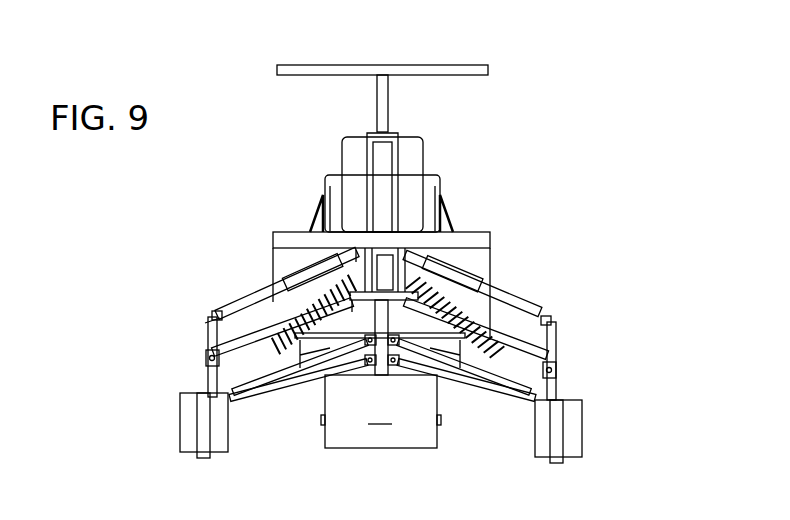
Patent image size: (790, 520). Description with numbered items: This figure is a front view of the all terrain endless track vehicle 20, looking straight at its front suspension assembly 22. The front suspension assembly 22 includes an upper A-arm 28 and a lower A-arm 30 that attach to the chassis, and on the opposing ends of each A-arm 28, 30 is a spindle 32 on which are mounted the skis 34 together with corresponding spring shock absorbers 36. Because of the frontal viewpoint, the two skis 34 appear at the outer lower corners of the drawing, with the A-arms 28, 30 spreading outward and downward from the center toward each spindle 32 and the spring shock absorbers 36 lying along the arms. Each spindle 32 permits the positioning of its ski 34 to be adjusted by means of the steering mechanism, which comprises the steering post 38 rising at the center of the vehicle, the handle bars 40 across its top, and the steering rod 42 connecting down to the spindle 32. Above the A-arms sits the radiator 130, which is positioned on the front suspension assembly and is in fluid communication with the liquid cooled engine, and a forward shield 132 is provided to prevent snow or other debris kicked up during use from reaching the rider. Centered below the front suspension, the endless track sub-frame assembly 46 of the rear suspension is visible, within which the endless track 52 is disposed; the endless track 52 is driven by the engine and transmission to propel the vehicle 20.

The all terrain endless track vehicle 20 is at (650, 176).
The front suspension assembly 22 is at (603, 396).
The upper A-arm 28 is at (250, 295).
The lower A-arm 30 is at (232, 402).
The spindle 32 is at (207, 318).
The ski 34 is at (192, 456).
The spring shock absorber 36 is at (300, 308).
The steering post 38 is at (372, 88).
The handle bars 40 is at (275, 70).
The steering rod 42 is at (205, 352).
The endless track sub-frame assembly 46 is at (440, 408).
The endless track 52 is at (381, 411).
The radiator 130 is at (423, 168).
The forward shield 132 is at (467, 232).